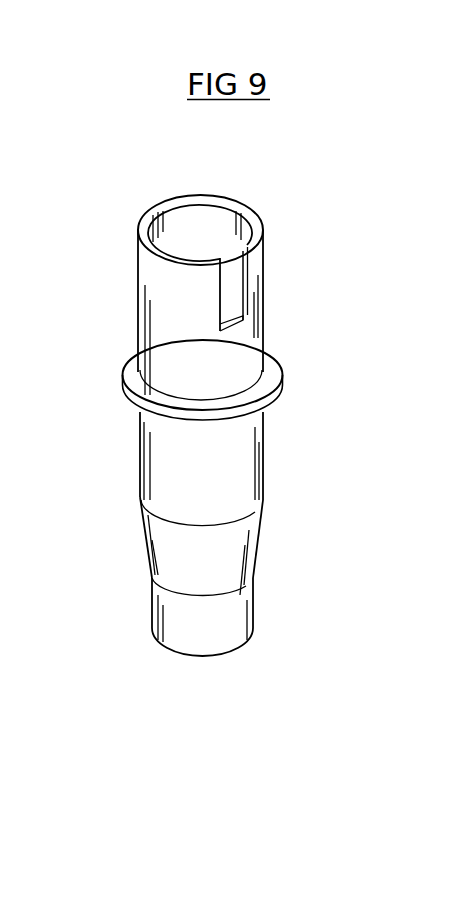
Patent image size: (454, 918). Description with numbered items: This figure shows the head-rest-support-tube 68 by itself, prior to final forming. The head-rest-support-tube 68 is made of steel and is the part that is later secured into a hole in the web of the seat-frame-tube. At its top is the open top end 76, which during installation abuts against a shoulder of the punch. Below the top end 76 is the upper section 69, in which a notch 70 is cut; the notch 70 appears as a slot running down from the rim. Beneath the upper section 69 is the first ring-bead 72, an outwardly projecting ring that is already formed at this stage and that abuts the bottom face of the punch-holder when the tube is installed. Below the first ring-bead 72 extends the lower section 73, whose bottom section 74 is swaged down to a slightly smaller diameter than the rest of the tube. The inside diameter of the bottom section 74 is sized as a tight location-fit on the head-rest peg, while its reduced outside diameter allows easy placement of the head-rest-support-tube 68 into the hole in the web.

The head-rest-support-tube 68 is at (277, 281).
The upper section 69 is at (152, 300).
The notch 70 is at (225, 283).
The first ring-bead 72 is at (123, 372).
The lower section 73 is at (277, 483).
The bottom section 74 is at (235, 617).
The top end 76 is at (171, 200).